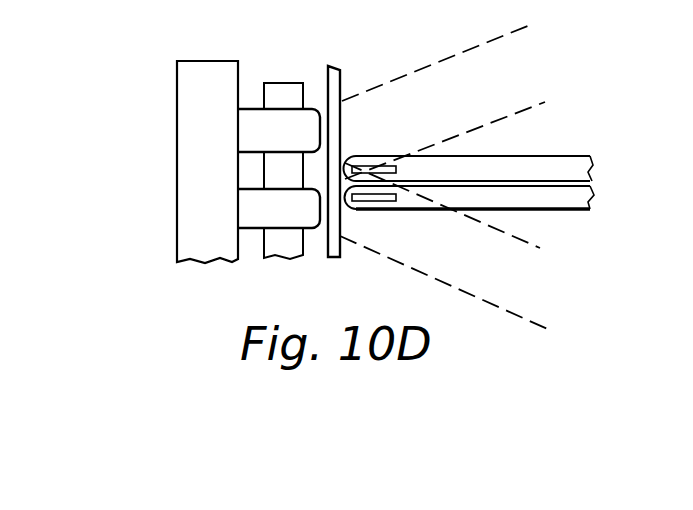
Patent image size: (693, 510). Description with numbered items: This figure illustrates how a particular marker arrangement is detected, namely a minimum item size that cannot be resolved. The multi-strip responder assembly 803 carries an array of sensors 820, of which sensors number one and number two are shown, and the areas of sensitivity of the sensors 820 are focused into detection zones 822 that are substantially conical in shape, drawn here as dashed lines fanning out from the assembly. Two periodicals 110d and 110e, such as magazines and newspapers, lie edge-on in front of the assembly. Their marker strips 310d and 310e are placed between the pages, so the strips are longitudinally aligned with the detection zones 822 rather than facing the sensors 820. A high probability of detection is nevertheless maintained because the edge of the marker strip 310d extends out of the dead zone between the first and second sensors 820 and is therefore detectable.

The multi-strip responder assembly 803 is at (177, 127).
The sensors 820 is at (247, 139).
The detection zones 822 is at (477, 47).
The periodical 110d is at (577, 156).
The periodical 110e is at (563, 211).
The marker strip 310d is at (377, 167).
The marker strip 310e is at (372, 204).